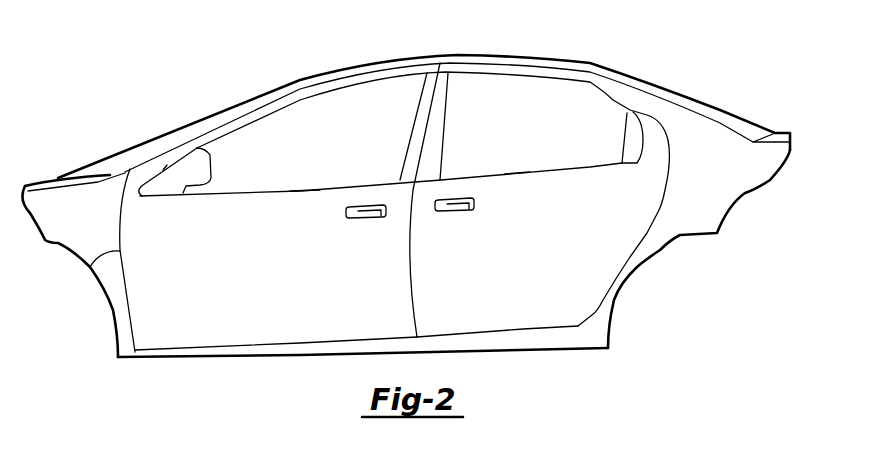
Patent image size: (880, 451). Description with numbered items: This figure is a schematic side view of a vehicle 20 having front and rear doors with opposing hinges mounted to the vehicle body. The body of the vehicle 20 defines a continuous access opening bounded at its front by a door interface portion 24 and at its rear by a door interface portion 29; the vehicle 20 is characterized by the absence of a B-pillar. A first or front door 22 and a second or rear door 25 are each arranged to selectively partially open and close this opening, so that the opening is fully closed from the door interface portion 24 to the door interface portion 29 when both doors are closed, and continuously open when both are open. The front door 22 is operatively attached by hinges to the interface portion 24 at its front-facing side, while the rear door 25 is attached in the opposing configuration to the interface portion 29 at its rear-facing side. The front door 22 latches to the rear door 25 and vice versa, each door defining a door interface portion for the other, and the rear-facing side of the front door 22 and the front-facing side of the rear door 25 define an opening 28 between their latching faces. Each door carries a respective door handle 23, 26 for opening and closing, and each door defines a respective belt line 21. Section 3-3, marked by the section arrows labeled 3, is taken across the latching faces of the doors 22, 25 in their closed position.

The vehicle 20 is at (659, 67).
The belt line 21 is at (294, 190).
The front door 22 is at (240, 325).
The door handle 23 is at (360, 213).
The door interface portion 24 is at (90, 270).
The rear door 25 is at (533, 317).
The door handle 26 is at (453, 207).
The opening 28 is at (408, 266).
The door interface portion 29 is at (662, 208).
The section 3- 3 is at (342, 193).